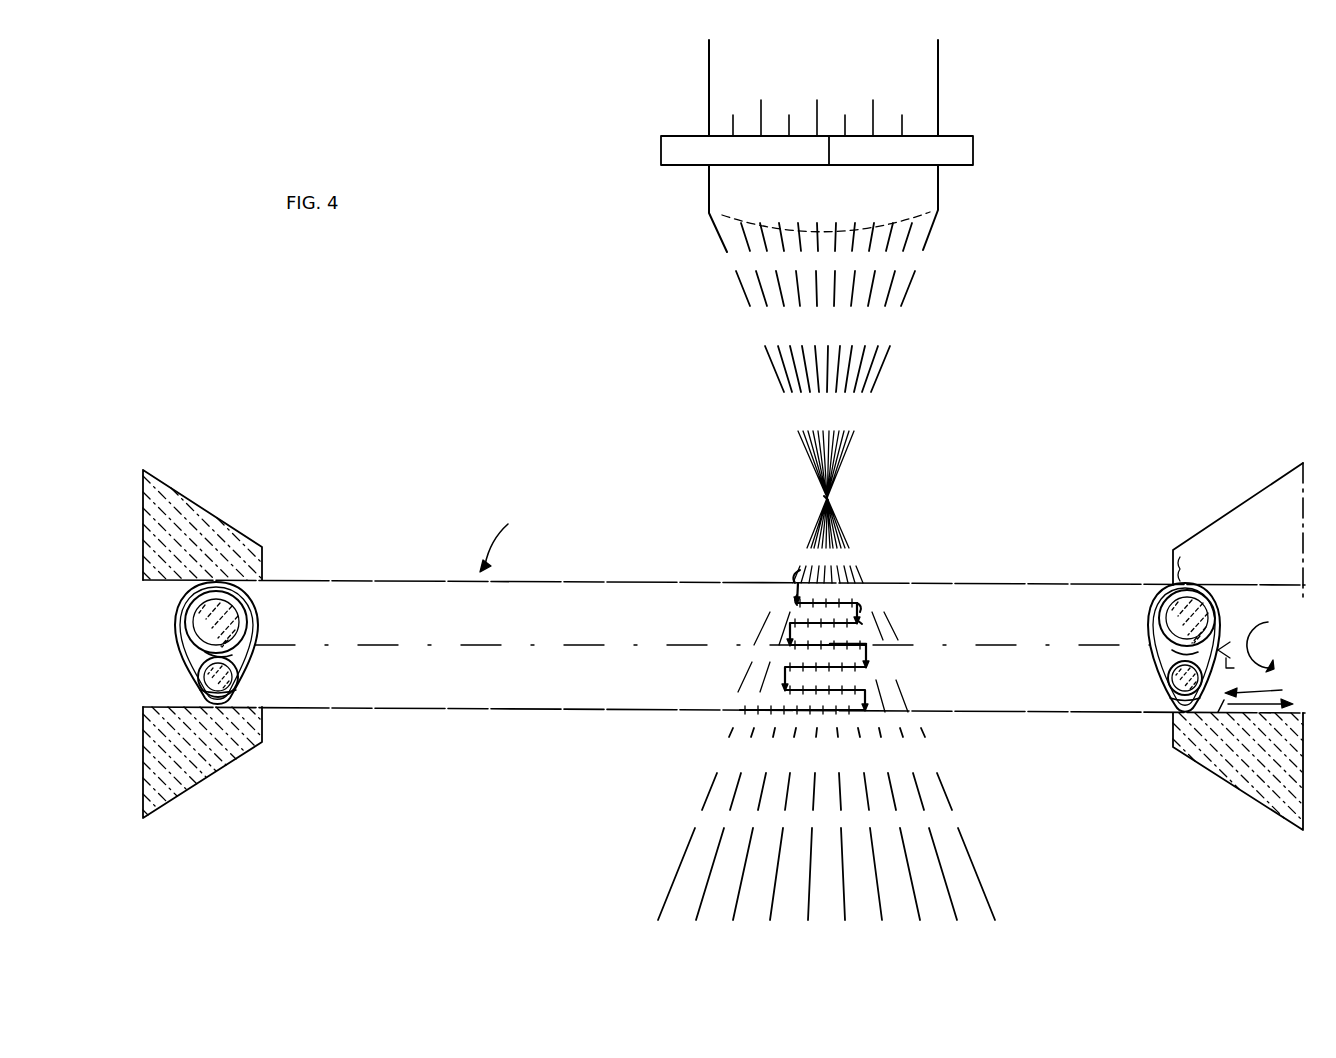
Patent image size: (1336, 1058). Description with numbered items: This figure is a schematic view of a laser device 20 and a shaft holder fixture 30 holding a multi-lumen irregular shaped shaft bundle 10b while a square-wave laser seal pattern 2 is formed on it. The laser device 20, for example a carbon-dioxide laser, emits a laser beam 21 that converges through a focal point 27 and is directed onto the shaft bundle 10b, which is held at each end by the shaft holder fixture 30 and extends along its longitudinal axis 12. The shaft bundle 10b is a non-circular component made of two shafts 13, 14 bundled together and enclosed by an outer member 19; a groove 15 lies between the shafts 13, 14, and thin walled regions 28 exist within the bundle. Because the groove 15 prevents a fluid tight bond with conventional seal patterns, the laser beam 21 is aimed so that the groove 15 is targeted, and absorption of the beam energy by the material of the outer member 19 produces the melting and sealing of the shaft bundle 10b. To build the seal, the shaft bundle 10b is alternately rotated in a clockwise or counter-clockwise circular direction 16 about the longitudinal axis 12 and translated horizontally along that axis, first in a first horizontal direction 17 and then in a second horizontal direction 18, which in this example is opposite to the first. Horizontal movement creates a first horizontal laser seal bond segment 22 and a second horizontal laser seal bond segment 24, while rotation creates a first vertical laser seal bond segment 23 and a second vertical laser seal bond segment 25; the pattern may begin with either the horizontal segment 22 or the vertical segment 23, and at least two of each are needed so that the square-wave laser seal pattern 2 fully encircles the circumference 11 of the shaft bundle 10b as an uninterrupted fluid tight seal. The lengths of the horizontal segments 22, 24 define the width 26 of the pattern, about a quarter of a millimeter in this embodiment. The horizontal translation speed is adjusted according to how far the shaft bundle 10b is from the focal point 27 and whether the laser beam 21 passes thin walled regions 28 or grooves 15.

The square-wave laser seal pattern 2 is at (882, 646).
The multi-lumen irregular shaped shaft bundle 10b is at (511, 539).
The circumference 11 is at (192, 664).
The longitudinal axis 12 is at (578, 645).
The shaft 13 is at (240, 608).
The shaft 14 is at (240, 680).
The groove 15 is at (232, 658).
The circular direction 16 is at (1260, 642).
The first horizontal direction 17 is at (1264, 688).
The second horizontal direction 18 is at (1219, 705).
The outer member 19 is at (397, 578).
The laser device 20 is at (938, 185).
The laser beam 21 is at (883, 348).
The first horizontal laser seal bond segment 22 is at (792, 573).
The first vertical laser seal bond segment 23 is at (790, 594).
The second horizontal laser seal bond segment 24 is at (847, 592).
The second vertical laser seal bond segment 25 is at (862, 612).
The width 26 is at (868, 583).
The focal point 27 is at (815, 500).
The thin walled region 28 is at (205, 686).
The shaft holder fixture 30 is at (245, 537).